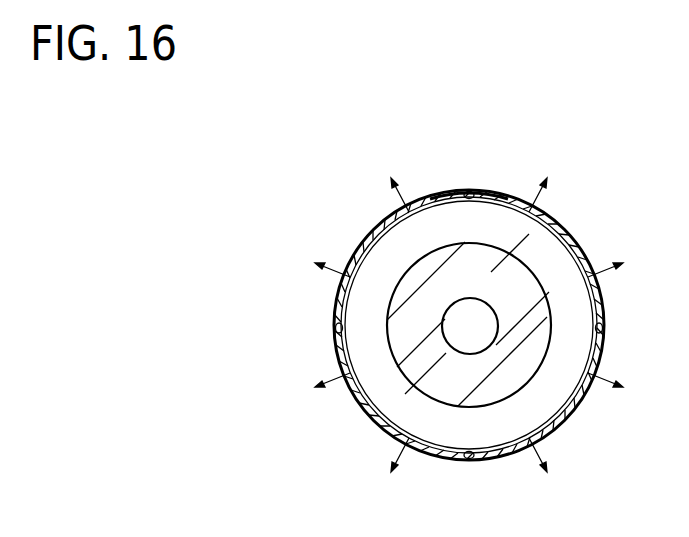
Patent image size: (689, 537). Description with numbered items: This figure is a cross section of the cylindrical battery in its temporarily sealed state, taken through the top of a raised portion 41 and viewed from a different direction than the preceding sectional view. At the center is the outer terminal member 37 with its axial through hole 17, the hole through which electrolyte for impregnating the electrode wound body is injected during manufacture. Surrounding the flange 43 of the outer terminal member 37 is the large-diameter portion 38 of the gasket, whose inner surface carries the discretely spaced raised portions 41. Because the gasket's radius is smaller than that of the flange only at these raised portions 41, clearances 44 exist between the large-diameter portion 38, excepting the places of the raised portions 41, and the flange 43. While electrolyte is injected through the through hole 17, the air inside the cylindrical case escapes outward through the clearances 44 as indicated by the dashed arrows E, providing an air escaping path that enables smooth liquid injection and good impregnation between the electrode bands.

The through hole 17 is at (485, 328).
The outer terminal member 37 is at (515, 268).
The large-diameter portion 38 is at (376, 417).
The raised portions 41 is at (336, 327).
The flange 43 is at (478, 212).
The clearances 44 is at (381, 224).
The dashed arrows E is at (469, 329).